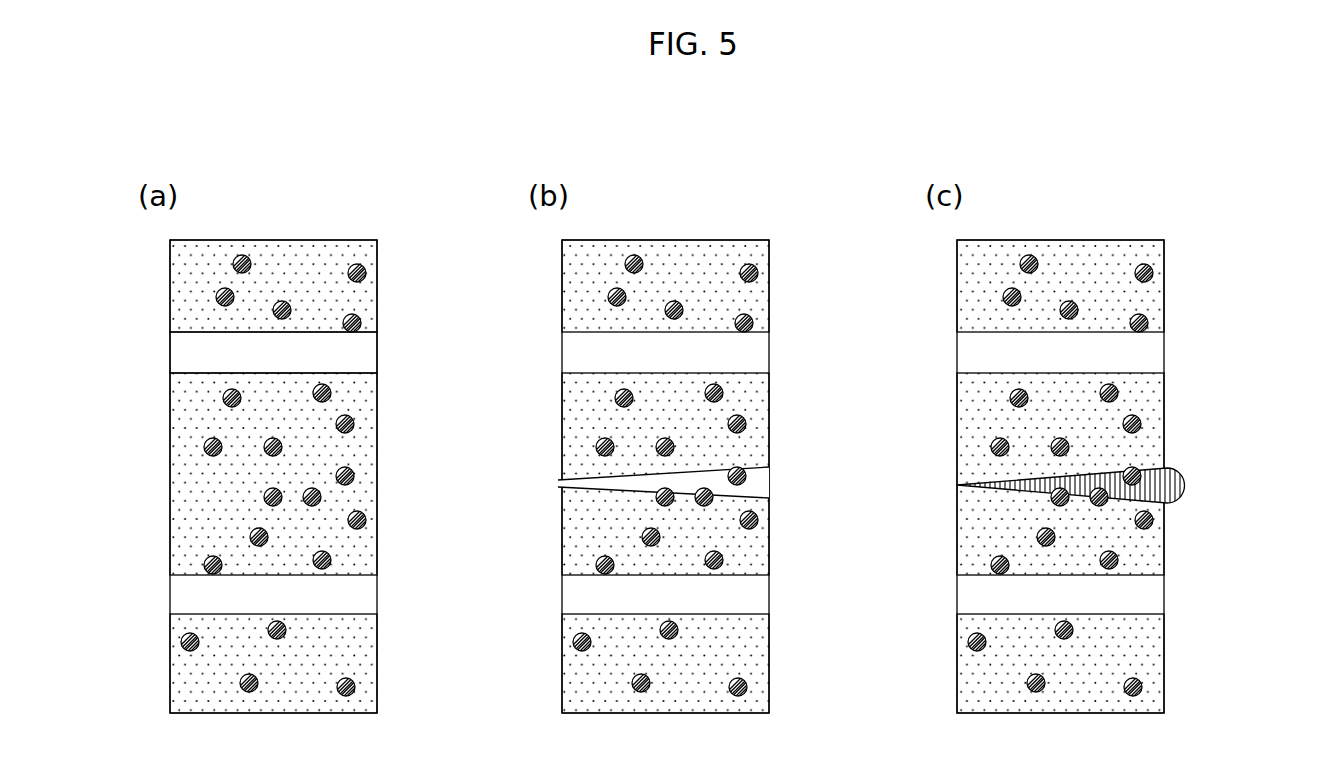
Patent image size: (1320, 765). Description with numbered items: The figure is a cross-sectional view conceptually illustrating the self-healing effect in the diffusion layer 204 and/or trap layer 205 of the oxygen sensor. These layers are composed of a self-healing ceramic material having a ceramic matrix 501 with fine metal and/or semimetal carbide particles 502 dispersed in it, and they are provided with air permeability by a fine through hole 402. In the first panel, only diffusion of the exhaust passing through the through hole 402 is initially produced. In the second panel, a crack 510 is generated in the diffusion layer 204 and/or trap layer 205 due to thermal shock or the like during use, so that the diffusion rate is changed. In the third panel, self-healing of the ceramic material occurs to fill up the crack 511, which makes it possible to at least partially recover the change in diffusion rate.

The diffusion layer 204 is at (311, 218).
The trap layer 205 is at (328, 415).
The fine metal and/or semimetal carbide particles 502 is at (360, 270).
The fine through hole 402 is at (365, 362).
The ceramic matrix 501 is at (365, 487).
The crack 510 is at (763, 485).
The filled crack 511 is at (1185, 478).